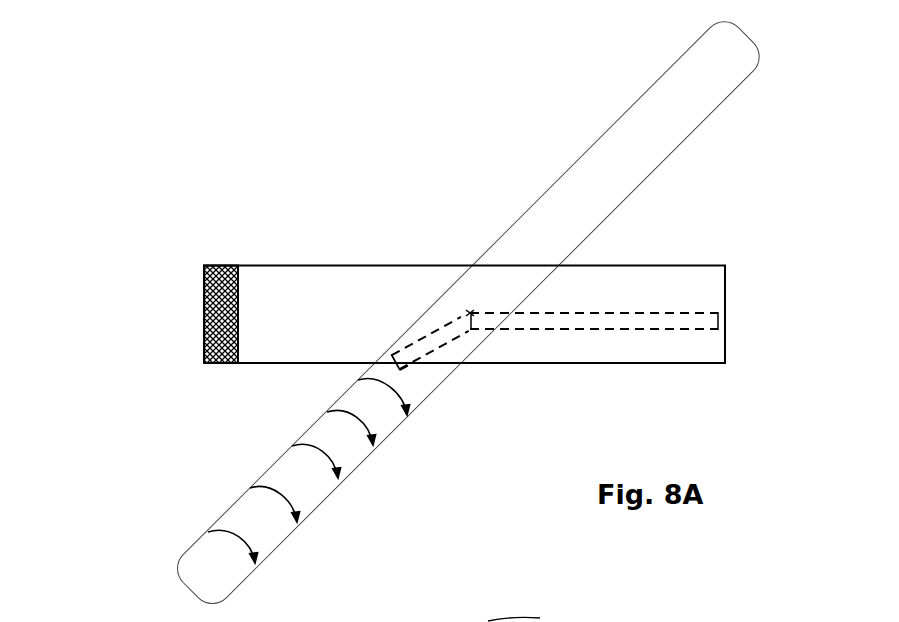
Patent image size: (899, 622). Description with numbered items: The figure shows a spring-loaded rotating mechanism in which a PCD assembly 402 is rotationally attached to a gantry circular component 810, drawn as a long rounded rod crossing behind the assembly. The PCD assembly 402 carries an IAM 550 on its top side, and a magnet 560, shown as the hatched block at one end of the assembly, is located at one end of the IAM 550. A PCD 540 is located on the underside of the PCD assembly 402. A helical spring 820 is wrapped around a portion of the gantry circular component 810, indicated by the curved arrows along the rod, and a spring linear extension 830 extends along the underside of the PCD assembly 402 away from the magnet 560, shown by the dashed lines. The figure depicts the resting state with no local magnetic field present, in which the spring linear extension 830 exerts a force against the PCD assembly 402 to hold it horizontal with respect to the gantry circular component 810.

The gantry circular component 810 is at (585, 152).
The PCD assembly 402 is at (345, 265).
The PCD 540 is at (595, 287).
The spring linear extension 830 is at (653, 332).
The magnet 560 is at (203, 327).
The IAM 550 is at (276, 327).
The helical spring 820 is at (330, 457).